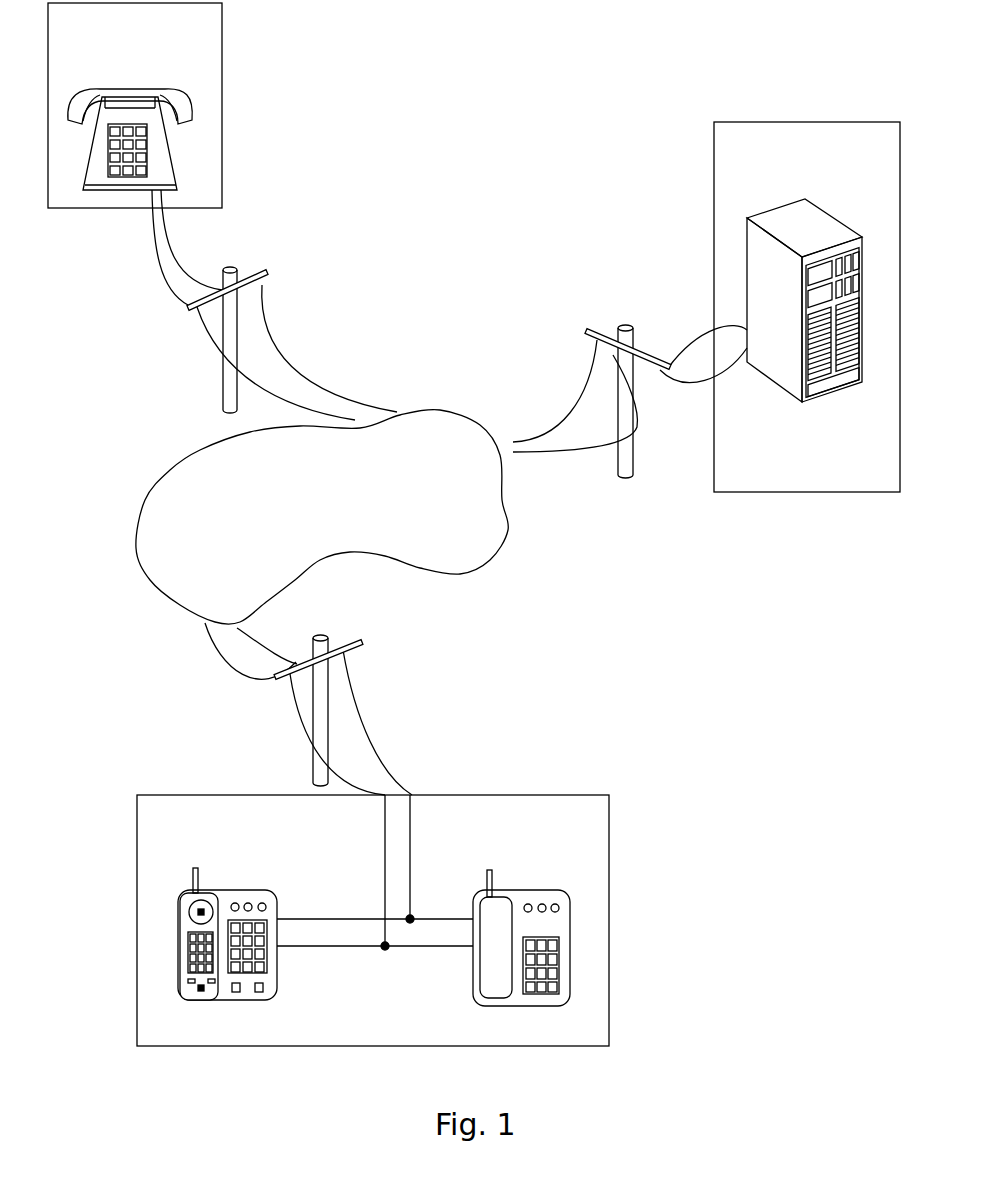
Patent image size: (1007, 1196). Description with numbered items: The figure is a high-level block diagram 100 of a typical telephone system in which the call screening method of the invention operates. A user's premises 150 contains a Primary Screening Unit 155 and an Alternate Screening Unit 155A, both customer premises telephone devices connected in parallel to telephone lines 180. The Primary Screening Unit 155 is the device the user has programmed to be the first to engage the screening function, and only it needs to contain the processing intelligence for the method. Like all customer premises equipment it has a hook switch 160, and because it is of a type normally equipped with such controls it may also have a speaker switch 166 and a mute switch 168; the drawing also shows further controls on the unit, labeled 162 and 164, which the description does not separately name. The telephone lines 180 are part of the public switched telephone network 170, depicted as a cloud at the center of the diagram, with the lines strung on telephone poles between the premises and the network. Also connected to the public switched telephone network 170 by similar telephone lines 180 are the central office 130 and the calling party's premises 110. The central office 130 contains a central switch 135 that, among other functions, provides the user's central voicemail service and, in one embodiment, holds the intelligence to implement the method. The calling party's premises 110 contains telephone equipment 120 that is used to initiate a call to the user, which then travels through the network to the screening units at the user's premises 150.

The high-level block diagram 100 is at (749, 54).
The calling party's premises 110 is at (212, 48).
The telephone equipment 120 is at (163, 155).
The central office 130 is at (725, 155).
The central switch 135 is at (753, 255).
The user's premises 150 is at (600, 933).
The Primary Screening Unit 155 is at (191, 926).
The Alternate Screening Unit 155A is at (553, 895).
The hook switch 160 is at (202, 925).
The handset indicator 162 is at (185, 988).
The indicator light 164 is at (212, 983).
The speaker switch 166 is at (237, 992).
The mute switch 168 is at (265, 993).
The public switched telephone network 170 is at (198, 482).
The telephone lines 180 is at (268, 272).